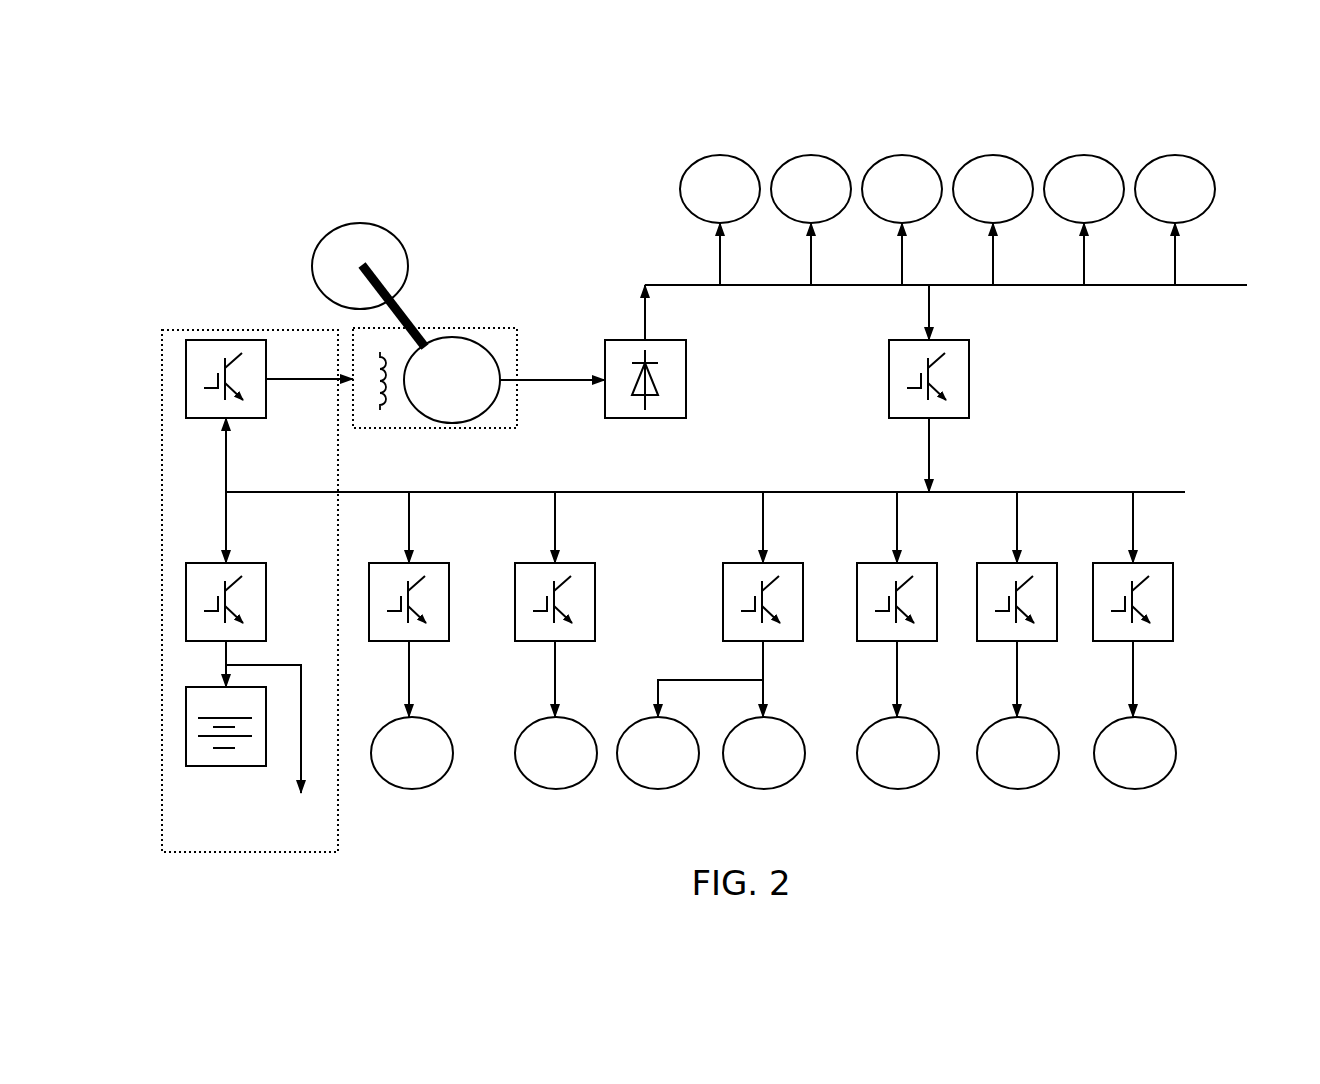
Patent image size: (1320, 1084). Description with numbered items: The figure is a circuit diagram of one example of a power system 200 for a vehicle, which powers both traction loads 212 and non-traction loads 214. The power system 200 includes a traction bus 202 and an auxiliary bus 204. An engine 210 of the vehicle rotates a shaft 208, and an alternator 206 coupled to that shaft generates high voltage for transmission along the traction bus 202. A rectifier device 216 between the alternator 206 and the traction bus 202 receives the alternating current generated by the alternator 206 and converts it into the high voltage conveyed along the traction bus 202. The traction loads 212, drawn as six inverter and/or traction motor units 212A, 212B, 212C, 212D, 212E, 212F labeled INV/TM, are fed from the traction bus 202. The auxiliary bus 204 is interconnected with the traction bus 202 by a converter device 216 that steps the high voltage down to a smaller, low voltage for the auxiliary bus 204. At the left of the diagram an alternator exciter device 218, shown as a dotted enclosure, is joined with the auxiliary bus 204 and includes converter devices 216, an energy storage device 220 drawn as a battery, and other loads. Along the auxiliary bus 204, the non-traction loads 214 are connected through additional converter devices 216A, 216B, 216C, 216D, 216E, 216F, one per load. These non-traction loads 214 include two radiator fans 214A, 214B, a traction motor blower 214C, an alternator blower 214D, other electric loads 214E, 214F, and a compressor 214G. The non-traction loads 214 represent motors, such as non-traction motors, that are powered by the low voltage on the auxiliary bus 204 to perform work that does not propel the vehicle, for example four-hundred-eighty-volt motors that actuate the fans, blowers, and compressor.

The power system 200 is at (560, 140).
The traction bus 202 is at (843, 288).
The auxiliary bus 204 is at (800, 488).
The alternator 206 is at (507, 328).
The shaft 208 is at (410, 308).
The engine 210 is at (360, 223).
The traction loads 212 is at (1024, 138).
The inverter/traction motor 212A is at (716, 155).
The inverter/traction motor 212B is at (807, 155).
The inverter/traction motor 212C is at (898, 155).
The inverter/traction motor 212D is at (990, 155).
The inverter/traction motor 212E is at (1081, 155).
The inverter/traction motor 212F is at (1172, 155).
The non-traction loads 214 is at (1185, 728).
The radiator fan 214A is at (1135, 790).
The radiator fan 214B is at (1018, 790).
The traction motor blower 214C is at (898, 790).
The alternator blower 214D is at (764, 790).
The other electric loads 214E is at (658, 790).
The other electric loads 214F is at (412, 790).
The compressor 214G is at (556, 790).
The rectifier device / converter device 216 is at (192, 420).
The converter device 216A is at (452, 580).
The converter device 216B is at (598, 580).
The converter device 216C is at (806, 580).
The converter device 216D is at (940, 580).
The converter device 216E is at (1060, 580).
The converter device 216F is at (1175, 578).
The alternator exciter device 218 is at (245, 328).
The energy storage device 220 is at (226, 768).